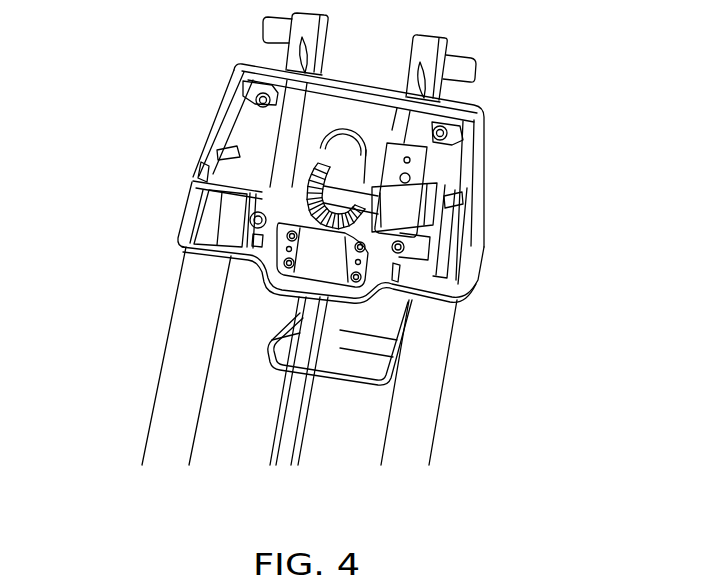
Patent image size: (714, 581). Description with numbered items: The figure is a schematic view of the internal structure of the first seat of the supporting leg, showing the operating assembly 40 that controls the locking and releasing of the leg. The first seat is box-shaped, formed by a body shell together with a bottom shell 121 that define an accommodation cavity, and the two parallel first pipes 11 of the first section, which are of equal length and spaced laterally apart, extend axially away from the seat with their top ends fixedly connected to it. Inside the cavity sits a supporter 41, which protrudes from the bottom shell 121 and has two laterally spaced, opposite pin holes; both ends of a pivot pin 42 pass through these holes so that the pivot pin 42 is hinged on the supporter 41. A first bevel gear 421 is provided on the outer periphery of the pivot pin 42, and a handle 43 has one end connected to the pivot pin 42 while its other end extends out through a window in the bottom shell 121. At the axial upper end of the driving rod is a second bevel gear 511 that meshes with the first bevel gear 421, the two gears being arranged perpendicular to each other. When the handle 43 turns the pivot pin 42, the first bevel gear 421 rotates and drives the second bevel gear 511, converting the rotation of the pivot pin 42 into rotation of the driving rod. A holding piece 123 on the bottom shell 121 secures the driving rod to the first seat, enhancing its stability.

The first pipe 11 is at (420, 423).
The operating assembly 40 is at (510, 124).
The supporter 41 is at (432, 178).
The pivot pin 42 is at (357, 200).
The handle 43 is at (353, 355).
The bottom shell 121 is at (207, 177).
The holding piece 123 is at (318, 267).
The first bevel gear 421 is at (306, 186).
The second bevel gear 511 is at (340, 230).